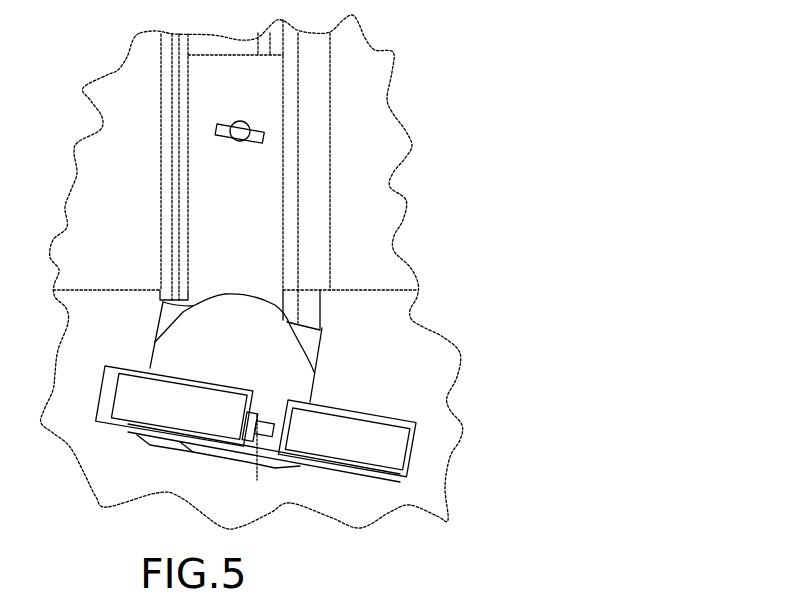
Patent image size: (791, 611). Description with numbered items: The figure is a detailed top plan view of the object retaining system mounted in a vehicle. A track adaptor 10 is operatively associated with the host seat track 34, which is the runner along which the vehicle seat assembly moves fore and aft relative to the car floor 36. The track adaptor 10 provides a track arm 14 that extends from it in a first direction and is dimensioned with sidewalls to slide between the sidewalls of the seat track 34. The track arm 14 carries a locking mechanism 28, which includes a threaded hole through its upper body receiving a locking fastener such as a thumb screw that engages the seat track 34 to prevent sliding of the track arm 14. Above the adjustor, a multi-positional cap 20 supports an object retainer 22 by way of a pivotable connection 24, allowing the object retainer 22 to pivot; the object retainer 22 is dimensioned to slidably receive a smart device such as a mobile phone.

The track adaptor 10 is at (150, 435).
The track arm 14 is at (203, 210).
The multi-positional cap 20 is at (280, 355).
The object retainer 22 is at (402, 480).
The pivotable connection 24 is at (255, 432).
The locking mechanism 28 is at (220, 128).
The seat track 34 is at (318, 140).
The car floor 36 is at (373, 240).